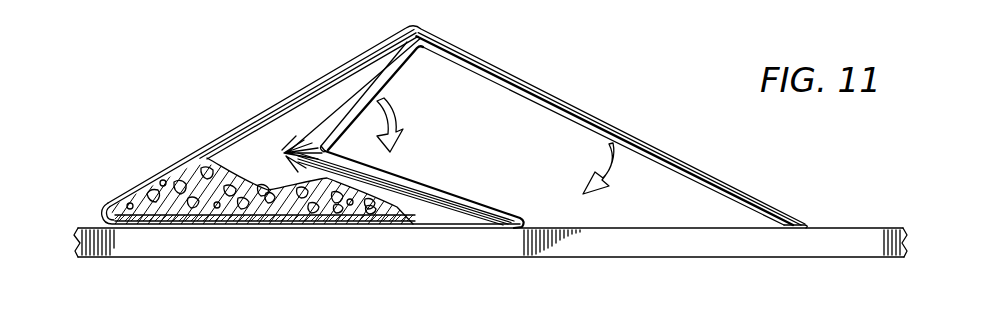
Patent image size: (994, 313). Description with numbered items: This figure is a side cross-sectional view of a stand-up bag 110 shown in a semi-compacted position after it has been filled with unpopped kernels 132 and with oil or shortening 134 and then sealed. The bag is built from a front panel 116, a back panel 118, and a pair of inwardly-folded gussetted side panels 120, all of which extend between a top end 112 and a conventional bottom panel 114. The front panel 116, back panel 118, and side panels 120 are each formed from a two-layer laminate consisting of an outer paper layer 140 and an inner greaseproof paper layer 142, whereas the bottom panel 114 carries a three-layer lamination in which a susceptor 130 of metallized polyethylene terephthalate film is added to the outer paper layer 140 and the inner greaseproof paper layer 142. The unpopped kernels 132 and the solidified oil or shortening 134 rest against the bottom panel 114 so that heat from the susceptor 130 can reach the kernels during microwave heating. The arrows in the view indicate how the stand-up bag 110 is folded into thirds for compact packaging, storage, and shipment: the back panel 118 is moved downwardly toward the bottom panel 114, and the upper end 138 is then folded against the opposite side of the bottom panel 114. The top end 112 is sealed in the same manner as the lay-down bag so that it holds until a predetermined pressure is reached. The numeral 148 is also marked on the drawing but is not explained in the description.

The stand-up bag 110 is at (556, 84).
The top end 112 is at (808, 224).
The bottom panel 114 is at (486, 233).
The front panel 116 is at (265, 108).
The back panel 118 is at (407, 71).
The inwardly-folded gussetted side panels 120 is at (325, 84).
The susceptor 130 is at (275, 224).
The unpopped kernels 132 is at (372, 212).
The oil or shortening 134 is at (388, 216).
The upper end 138 is at (658, 141).
The outer paper layer 140 is at (195, 229).
The inner greaseproof paper layer 142 is at (178, 192).
The end portion 148 is at (91, 228).